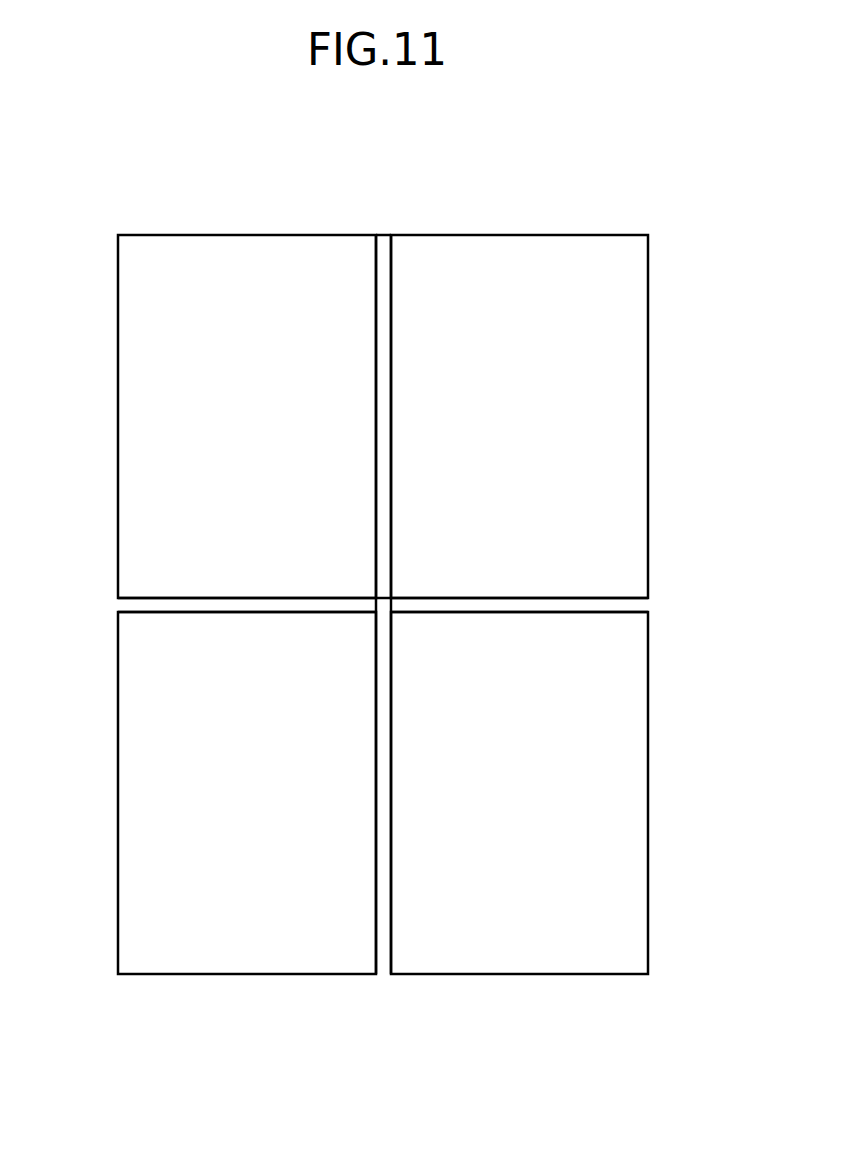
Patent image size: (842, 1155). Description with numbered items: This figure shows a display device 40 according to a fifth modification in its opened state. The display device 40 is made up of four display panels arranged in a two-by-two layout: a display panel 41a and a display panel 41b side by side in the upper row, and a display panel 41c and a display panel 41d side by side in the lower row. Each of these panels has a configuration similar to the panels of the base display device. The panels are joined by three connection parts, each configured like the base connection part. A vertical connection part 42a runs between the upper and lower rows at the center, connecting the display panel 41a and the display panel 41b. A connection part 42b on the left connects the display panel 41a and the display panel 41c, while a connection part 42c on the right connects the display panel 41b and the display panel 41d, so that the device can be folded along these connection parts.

The display device 40 is at (703, 176).
The display panel 41a is at (117, 419).
The display panel 41b is at (649, 420).
The display panel 41c is at (117, 797).
The display panel 41d is at (649, 798).
The connection part 42a is at (382, 234).
The connection part 42b is at (117, 607).
The connection part 42c is at (649, 607).